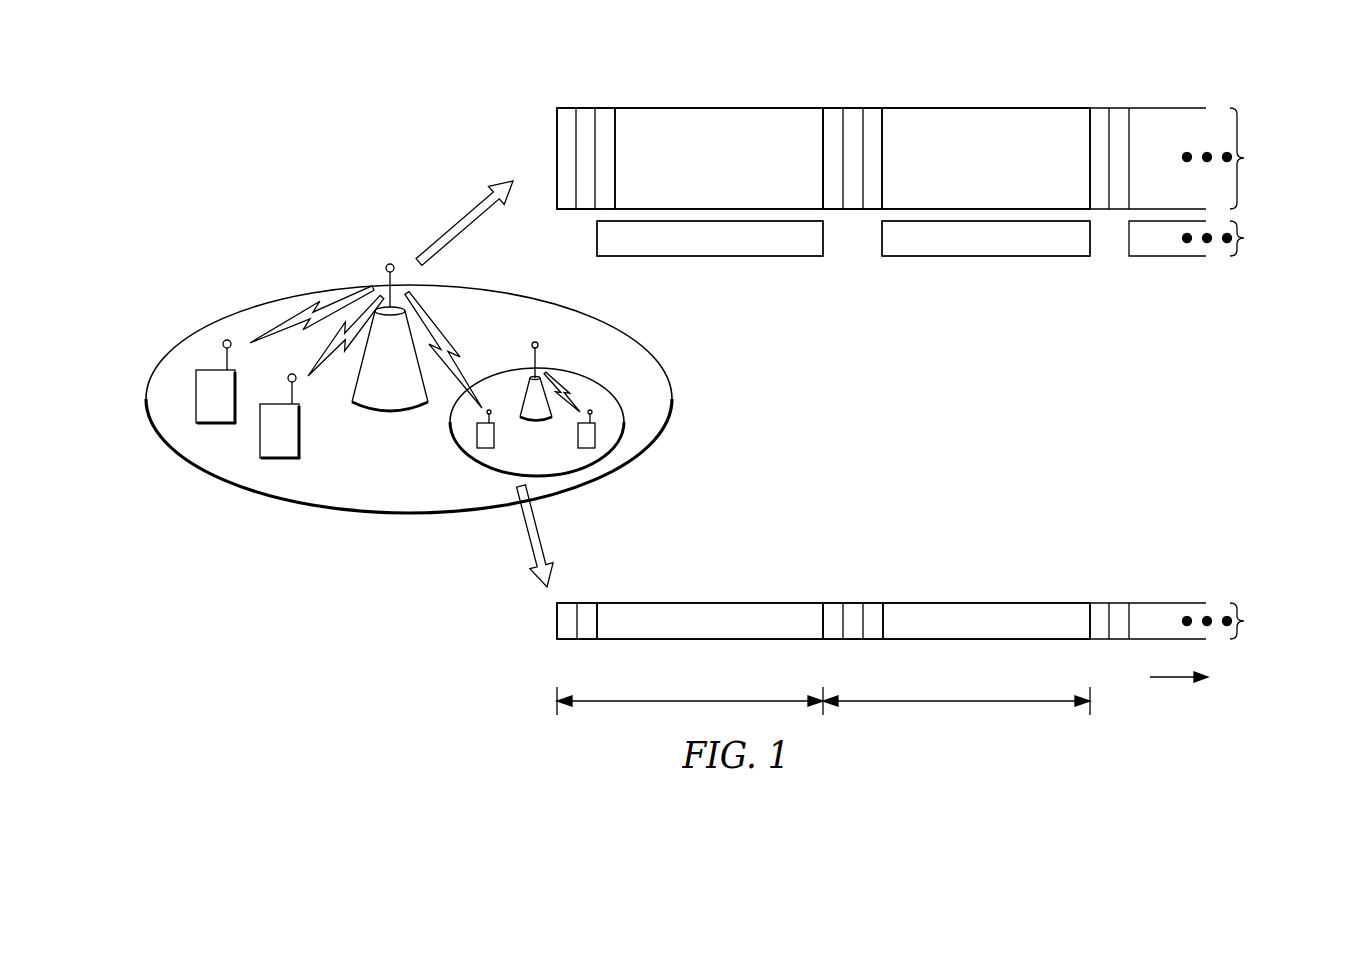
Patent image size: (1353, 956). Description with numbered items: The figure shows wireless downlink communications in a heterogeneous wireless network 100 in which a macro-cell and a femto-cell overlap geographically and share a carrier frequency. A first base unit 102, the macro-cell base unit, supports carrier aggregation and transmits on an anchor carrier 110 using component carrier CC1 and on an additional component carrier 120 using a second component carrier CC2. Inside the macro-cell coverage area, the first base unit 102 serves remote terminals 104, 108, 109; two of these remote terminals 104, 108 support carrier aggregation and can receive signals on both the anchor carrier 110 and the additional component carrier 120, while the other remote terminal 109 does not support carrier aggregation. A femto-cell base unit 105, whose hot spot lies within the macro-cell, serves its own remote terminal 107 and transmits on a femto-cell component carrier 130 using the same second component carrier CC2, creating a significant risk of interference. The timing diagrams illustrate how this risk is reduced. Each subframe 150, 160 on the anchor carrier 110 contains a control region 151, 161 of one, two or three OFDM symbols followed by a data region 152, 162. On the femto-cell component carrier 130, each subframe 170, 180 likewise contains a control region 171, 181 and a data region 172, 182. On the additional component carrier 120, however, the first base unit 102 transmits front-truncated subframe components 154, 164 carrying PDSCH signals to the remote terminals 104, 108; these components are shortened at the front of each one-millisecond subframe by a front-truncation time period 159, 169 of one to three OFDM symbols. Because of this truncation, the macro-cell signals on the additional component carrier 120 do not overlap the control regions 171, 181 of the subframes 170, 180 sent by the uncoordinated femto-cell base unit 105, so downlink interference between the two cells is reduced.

The heterogeneous wireless network 100 is at (177, 43).
The first base unit 102 is at (365, 414).
The remote terminal 104 is at (287, 402).
The femto-cell base unit 105 is at (536, 422).
The remote terminal 107 is at (595, 438).
The remote terminal 108 is at (477, 435).
The remote terminal 109 is at (222, 368).
The anchor carrier 110 is at (794, 158).
The additional component carrier 120 is at (758, 223).
The femto-cell component carrier 130 is at (793, 666).
The subframe 150 is at (557, 65).
The control region 151 is at (557, 102).
The data region 152 is at (712, 113).
The front-truncated subframe component 154 is at (697, 248).
The front-truncation time period 159 is at (597, 253).
The subframe 160 is at (1090, 65).
The control region 161 is at (882, 102).
The data region 162 is at (981, 113).
The front-truncated subframe component 164 is at (989, 248).
The front-truncation time period 169 is at (882, 252).
The subframe 170 is at (557, 592).
The control region 171 is at (557, 645).
The data region 172 is at (684, 640).
The subframe 180 is at (1090, 592).
The control region 181 is at (882, 644).
The data region 182 is at (990, 640).